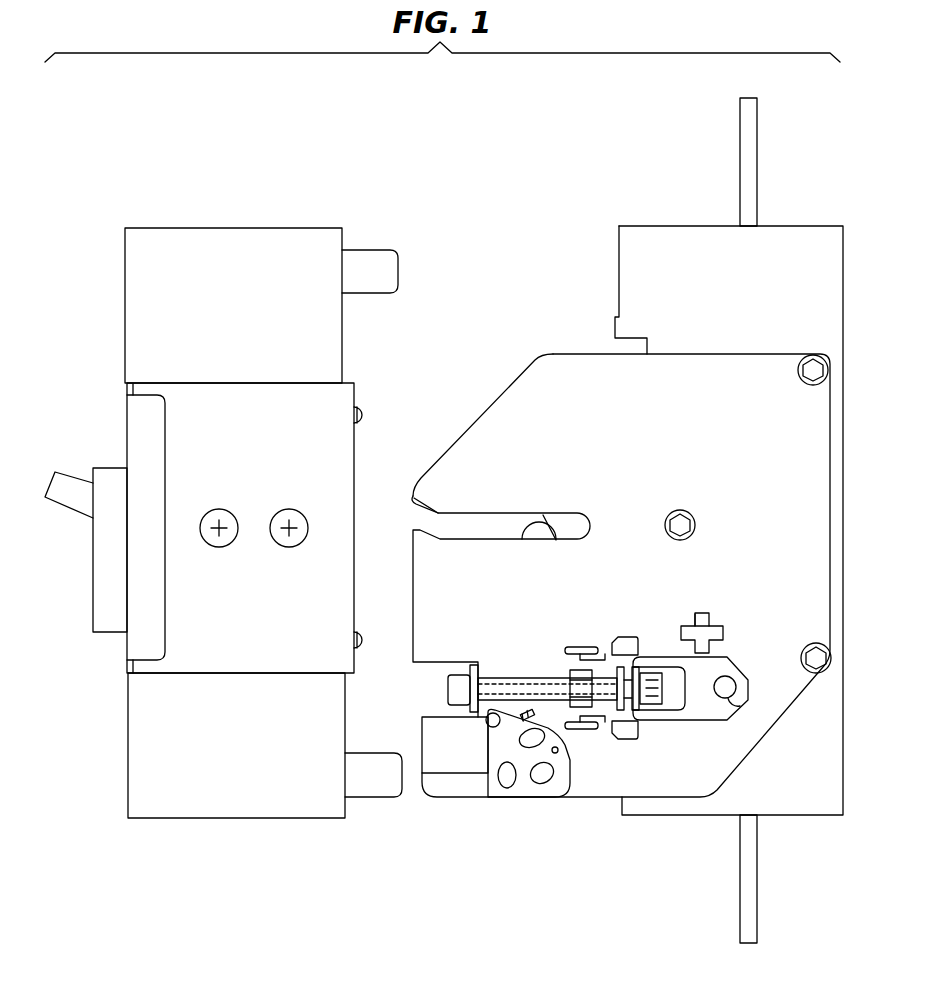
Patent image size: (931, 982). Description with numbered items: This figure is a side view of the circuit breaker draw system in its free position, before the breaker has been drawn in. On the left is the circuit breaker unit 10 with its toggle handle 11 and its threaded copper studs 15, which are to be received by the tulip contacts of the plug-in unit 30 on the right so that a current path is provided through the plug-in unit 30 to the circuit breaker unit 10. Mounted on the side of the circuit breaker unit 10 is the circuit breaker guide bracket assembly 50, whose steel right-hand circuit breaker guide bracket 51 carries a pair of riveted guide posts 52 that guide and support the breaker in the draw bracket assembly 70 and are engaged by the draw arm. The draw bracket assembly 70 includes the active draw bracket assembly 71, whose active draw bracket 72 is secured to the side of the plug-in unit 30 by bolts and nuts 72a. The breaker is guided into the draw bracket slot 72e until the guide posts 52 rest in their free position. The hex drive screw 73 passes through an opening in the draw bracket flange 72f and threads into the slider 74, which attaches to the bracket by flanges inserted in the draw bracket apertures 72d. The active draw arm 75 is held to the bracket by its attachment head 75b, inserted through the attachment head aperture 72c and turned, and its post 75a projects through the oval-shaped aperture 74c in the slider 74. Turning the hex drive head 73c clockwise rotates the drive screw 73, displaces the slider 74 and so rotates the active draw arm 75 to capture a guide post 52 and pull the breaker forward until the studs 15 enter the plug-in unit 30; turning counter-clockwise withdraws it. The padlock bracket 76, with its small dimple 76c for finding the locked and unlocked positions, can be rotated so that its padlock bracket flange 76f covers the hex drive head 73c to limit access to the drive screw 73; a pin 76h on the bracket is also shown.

The circuit breaker unit 10 is at (215, 238).
The toggle handle 11 is at (72, 484).
The threaded copper studs 15 is at (368, 262).
The plug-in unit 30 is at (786, 226).
The circuit breaker guide bracket assembly 50 is at (138, 712).
The right-hand circuit breaker guide bracket 51 is at (222, 393).
The guide posts 52 is at (283, 511).
The circuit breaker draw bracket assembly 70 is at (576, 345).
The active draw bracket assembly 71 is at (480, 412).
The active draw bracket 72 is at (710, 372).
The bolts and nuts 72a is at (813, 380).
The attachment head aperture 72c is at (697, 616).
The draw bracket apertures 72d is at (628, 644).
The draw bracket slot 72e is at (430, 503).
The draw bracket flange 72f is at (625, 672).
The hex drive screw 73 is at (497, 680).
The hex drive head 73c is at (455, 686).
The slider 74 is at (680, 721).
The oval-shaped aperture 74c is at (735, 707).
The active draw arm 75 is at (540, 522).
The post 75a is at (736, 674).
The attachment head 75b is at (718, 628).
The padlock bracket 76 is at (475, 797).
The small dimple 76c is at (558, 753).
The padlock bracket flange 76f is at (455, 772).
The cam pin 76h is at (527, 712).